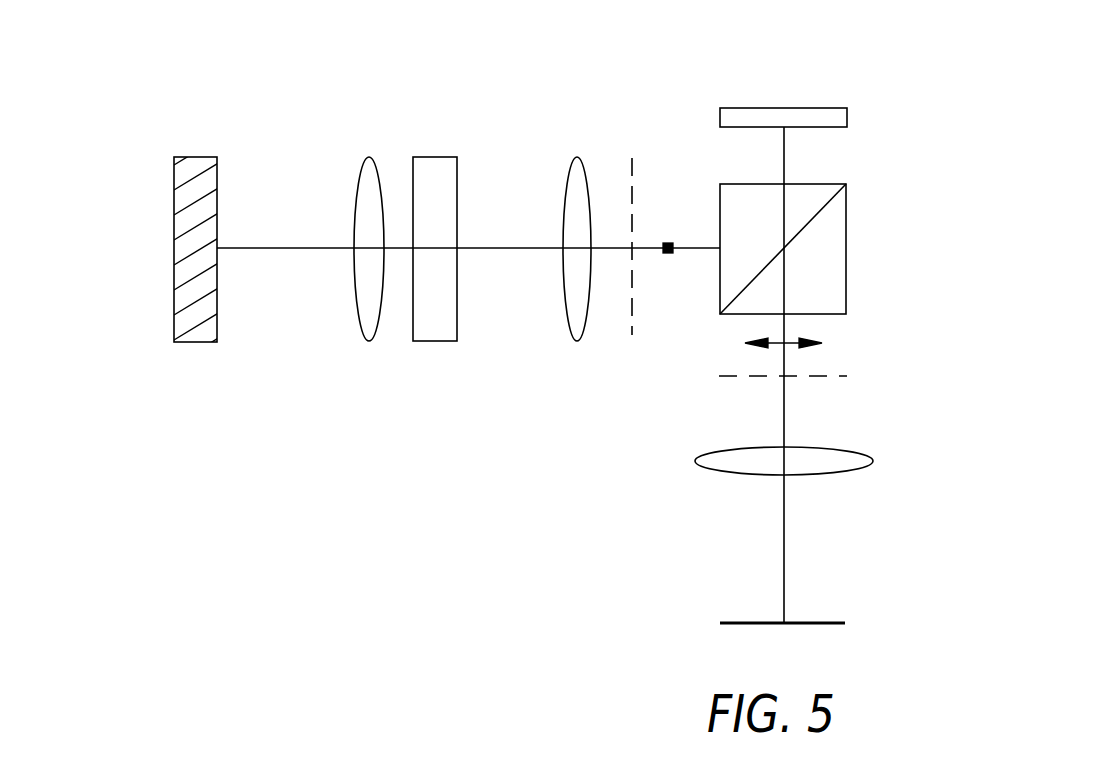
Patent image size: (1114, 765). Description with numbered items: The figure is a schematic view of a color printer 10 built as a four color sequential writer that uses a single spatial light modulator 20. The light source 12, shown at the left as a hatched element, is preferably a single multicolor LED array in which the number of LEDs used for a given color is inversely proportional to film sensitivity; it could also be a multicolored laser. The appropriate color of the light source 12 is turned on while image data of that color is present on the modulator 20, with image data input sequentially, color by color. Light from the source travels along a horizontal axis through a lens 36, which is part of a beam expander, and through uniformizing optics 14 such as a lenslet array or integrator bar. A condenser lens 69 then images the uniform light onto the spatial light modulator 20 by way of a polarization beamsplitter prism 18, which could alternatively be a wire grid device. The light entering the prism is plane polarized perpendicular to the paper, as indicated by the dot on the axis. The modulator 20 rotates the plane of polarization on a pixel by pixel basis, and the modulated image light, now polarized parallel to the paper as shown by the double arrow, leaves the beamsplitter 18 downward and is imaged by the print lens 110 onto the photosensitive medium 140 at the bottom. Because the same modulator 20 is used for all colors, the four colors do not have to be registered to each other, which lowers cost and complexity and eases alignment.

The color printer 10 is at (1008, 92).
The light source 12 is at (195, 157).
The uniformizing optics 14 is at (432, 157).
The polarization beamsplitter prism 18 is at (846, 218).
The spatial light modulator 20 is at (847, 115).
The lens 36 is at (360, 178).
The condenser lens 69 is at (563, 205).
The print lens 110 is at (865, 452).
The photosensitive medium 140 is at (845, 623).